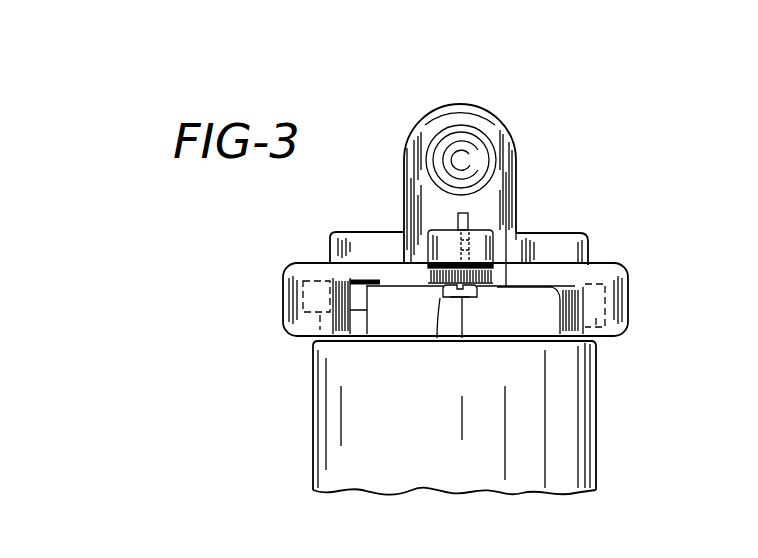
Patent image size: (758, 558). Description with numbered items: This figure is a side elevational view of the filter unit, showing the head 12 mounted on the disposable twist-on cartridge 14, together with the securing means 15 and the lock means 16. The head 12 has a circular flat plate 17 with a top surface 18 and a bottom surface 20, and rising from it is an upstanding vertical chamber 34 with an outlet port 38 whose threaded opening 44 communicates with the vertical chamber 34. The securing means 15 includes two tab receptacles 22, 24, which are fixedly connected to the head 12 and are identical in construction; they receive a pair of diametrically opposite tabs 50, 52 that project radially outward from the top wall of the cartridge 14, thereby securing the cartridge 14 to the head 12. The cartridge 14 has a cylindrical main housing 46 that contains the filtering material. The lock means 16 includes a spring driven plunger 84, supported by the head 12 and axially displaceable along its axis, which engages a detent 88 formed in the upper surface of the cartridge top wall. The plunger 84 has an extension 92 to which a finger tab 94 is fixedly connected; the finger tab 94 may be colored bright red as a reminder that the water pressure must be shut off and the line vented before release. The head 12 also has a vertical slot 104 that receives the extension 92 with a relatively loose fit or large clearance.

The head 12 is at (420, 126).
The cartridge 14 is at (603, 431).
The securing means 15 is at (280, 323).
The lock means 16 is at (433, 312).
The circular flat plate 17 is at (540, 270).
The top surface 18 is at (529, 273).
The bottom surface 20 is at (520, 289).
The tab receptacle 22 is at (284, 336).
The tab receptacle 24 is at (627, 337).
The vertical chamber 34 is at (403, 180).
The outlet port 38 is at (490, 112).
The threaded opening 44 is at (473, 148).
The main housing 46 is at (313, 433).
The tab 50 is at (305, 286).
The tab 52 is at (606, 303).
The spring driven plunger 84 is at (448, 295).
The detent 88 is at (466, 294).
The extension 92 is at (467, 237).
The finger tab 94 is at (440, 258).
The vertical slot 104 is at (456, 218).